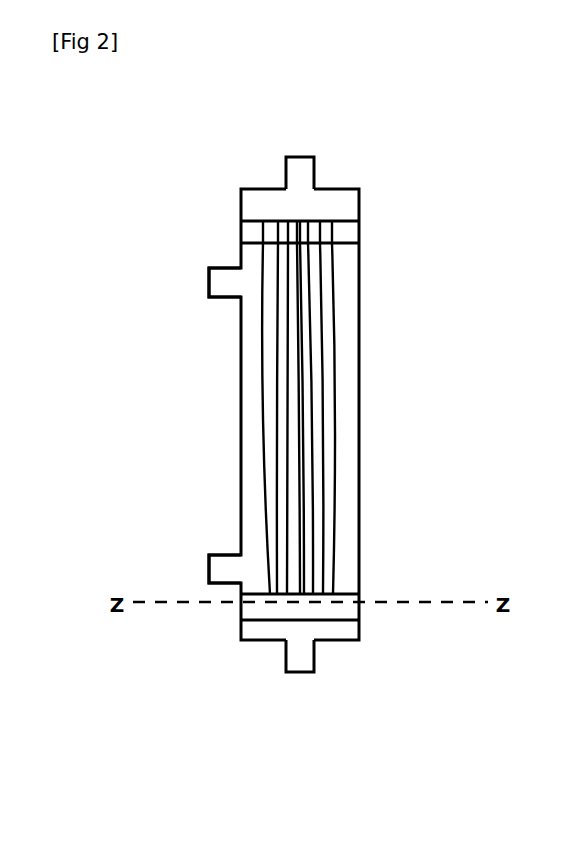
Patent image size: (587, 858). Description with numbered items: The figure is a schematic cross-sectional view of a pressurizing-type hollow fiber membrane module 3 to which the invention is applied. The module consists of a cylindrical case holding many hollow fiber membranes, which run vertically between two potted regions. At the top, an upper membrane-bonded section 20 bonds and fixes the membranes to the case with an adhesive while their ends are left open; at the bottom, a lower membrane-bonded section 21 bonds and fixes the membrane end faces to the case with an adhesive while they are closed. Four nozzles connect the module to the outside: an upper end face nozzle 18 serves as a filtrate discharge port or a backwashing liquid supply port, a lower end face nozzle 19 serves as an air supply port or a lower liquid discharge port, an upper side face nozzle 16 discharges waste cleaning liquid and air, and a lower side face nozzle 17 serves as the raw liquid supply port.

The hollow fiber membrane module 3 is at (360, 450).
The upper side face nozzle 16 is at (208, 282).
The lower side face nozzle 17 is at (209, 570).
The upper end face nozzle 18 is at (302, 157).
The lower end face nozzle 19 is at (303, 673).
The upper membrane-bonded section 20 is at (360, 232).
The lower membrane-bonded section 21 is at (360, 618).